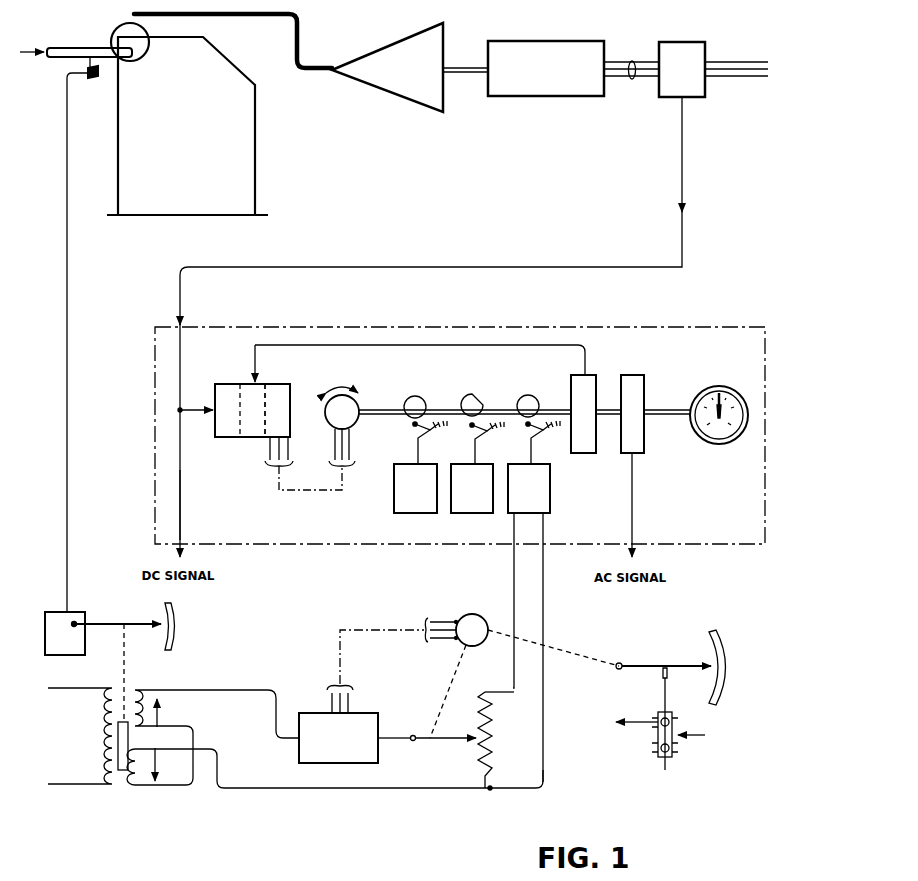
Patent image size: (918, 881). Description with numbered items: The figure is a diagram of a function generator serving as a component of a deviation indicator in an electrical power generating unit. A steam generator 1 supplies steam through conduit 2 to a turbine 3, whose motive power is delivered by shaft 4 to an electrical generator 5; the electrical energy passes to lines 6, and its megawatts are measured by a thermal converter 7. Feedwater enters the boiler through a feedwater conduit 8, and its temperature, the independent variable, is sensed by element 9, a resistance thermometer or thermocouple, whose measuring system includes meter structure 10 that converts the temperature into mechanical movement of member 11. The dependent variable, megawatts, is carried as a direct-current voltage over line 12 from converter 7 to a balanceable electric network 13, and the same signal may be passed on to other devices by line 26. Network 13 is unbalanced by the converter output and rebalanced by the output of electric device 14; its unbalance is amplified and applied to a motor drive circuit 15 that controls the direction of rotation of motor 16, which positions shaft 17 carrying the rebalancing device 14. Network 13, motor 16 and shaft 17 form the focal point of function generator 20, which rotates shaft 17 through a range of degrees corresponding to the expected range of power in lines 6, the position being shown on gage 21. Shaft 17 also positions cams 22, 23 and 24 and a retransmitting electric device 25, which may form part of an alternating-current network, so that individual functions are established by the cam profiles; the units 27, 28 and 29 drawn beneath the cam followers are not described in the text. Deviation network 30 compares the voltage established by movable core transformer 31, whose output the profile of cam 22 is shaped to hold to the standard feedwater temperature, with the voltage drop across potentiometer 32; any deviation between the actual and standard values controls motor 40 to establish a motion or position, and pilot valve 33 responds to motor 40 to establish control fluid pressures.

The steam generator 1 is at (192, 185).
The conduit 2 is at (241, 16).
The turbine 3 is at (380, 44).
The shaft 4 is at (458, 68).
The electrical generator 5 is at (580, 41).
The lines 6 is at (634, 62).
The thermal converter 7 is at (686, 42).
The feedwater line 8 is at (57, 60).
The sensing element 9 is at (90, 49).
The meter structure 10 is at (57, 612).
The member 11 is at (108, 624).
The line 12 is at (682, 153).
The balanceable electric network 13 is at (235, 384).
The rebalancing electric device 14 is at (593, 375).
The motor drive circuit 15 is at (282, 384).
The motor 16 is at (327, 415).
The shaft 17 is at (383, 408).
The function generator 20 is at (388, 327).
The gage 21 is at (721, 386).
The cam 22 is at (536, 397).
The cam 23 is at (480, 396).
The cam 24 is at (424, 398).
The retransmitting electric device 25 is at (646, 375).
The line 26 is at (180, 502).
The function unit 27 is at (529, 623).
The function unit 28 is at (472, 488).
The function unit 29 is at (415, 488).
The deviation network 30 is at (288, 670).
The movable core transformer 31 is at (140, 680).
The potentiometer 32 is at (462, 766).
The pilot valve 33 is at (657, 757).
The motor 40 is at (460, 615).